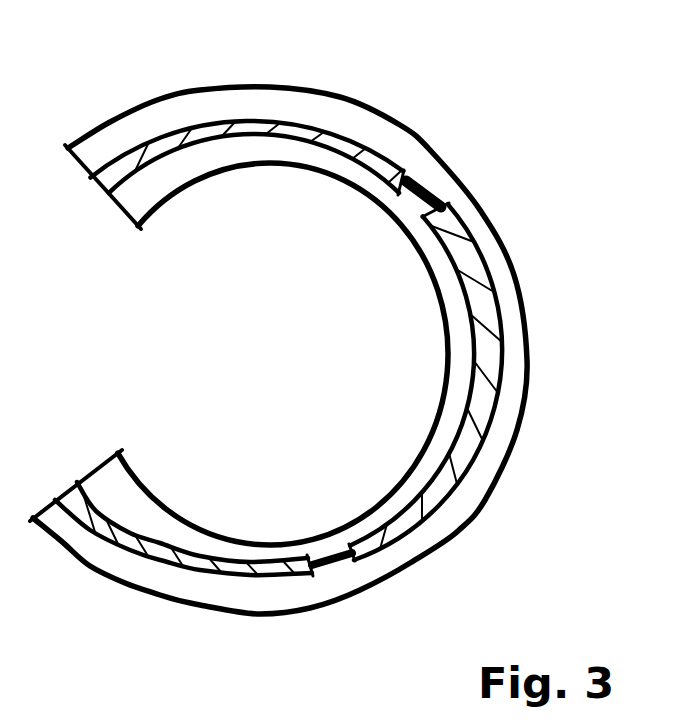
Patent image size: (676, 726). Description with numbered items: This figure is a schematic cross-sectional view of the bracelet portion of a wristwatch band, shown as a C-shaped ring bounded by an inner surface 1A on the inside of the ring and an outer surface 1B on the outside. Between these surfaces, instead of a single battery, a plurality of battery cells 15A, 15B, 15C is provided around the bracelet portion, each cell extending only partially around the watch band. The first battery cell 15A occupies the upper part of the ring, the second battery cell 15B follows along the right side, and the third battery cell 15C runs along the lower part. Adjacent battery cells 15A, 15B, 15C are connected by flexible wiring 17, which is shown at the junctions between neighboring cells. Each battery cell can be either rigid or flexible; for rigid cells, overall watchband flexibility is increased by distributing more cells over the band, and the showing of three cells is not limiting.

The inner surface 1A is at (437, 287).
The outer surface 1B is at (467, 185).
The battery cell 15A is at (305, 127).
The battery cell 15B is at (500, 375).
The battery cell 15C is at (203, 572).
The flexible wiring 17 is at (424, 182).